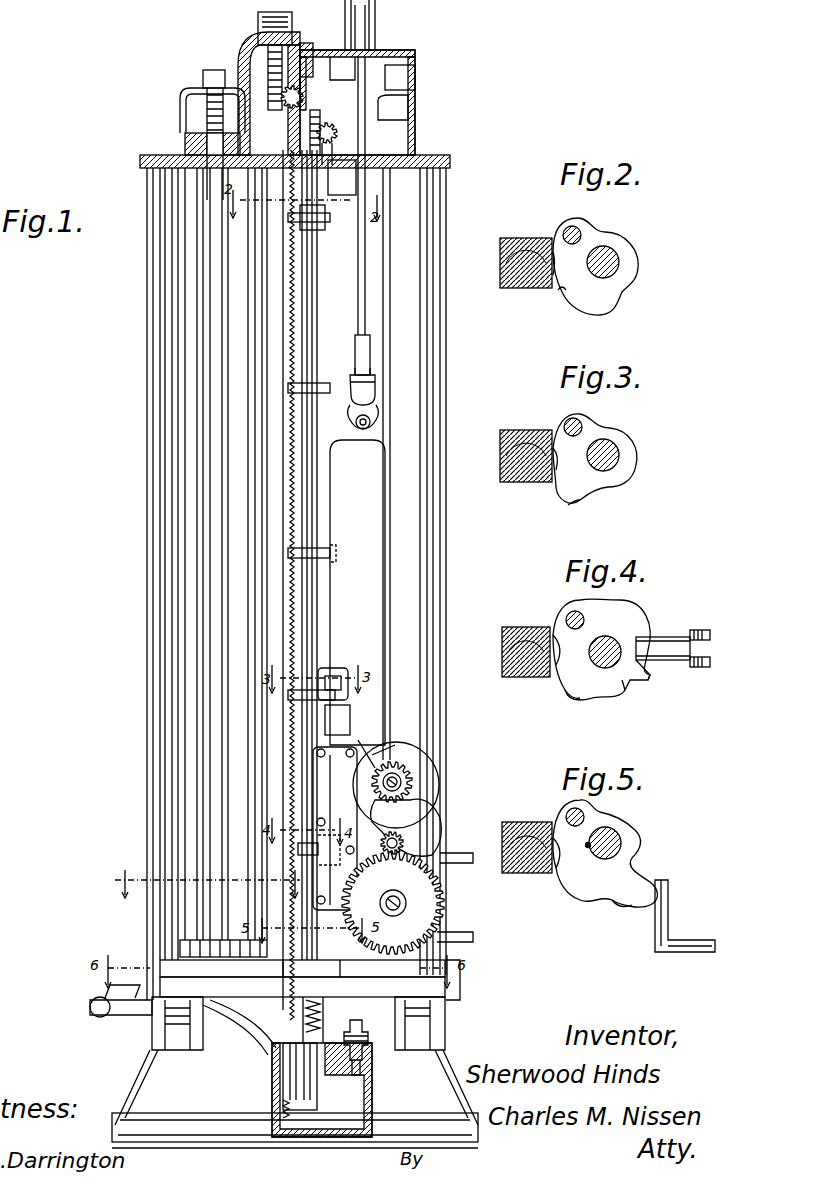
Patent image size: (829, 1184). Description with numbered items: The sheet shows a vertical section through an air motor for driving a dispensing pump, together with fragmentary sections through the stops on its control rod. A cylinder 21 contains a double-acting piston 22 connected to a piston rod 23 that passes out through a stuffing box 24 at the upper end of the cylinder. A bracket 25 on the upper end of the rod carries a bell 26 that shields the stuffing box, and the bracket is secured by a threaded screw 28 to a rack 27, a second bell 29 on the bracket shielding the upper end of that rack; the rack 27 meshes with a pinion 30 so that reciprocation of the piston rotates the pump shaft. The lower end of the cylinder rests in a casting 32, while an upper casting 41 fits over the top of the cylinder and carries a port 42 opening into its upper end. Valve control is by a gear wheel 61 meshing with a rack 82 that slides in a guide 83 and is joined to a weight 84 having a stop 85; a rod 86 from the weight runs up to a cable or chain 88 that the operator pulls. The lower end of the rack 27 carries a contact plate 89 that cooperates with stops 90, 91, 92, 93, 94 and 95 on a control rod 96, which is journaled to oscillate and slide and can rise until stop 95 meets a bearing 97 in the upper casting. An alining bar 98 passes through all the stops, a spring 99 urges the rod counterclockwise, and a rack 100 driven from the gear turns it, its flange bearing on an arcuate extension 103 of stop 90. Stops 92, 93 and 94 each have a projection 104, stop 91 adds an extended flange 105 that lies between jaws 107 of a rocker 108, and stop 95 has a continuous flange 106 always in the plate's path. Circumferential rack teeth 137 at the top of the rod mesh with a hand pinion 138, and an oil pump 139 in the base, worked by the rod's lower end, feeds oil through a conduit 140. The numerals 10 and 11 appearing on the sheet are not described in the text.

In FIG. 1, the cap 10 is at (289, 27).
In FIG. 1, the section line 11 is at (106, 880).
In FIG. 1, the cylinder 21 is at (178, 733).
In FIG. 1, the double-acting piston 22 is at (177, 947).
In FIG. 1, the piston rod 23 is at (213, 532).
In FIG. 1, the stuffing box 24 is at (186, 140).
In FIG. 1, the bracket 25 is at (241, 78).
In FIG. 1, the bell 26 is at (182, 108).
In FIG. 1, the rack 27 is at (270, 137).
In FIG. 2, the rack 27 is at (530, 255).
In FIG. 3, the rack 27 is at (510, 468).
In FIG. 4, the rack 27 is at (537, 647).
In FIG. 5, the rack 27 is at (527, 830).
In FIG. 1, the threaded screw 28 is at (305, 55).
In FIG. 1, the bell 29 is at (247, 50).
In FIG. 1, the pinion 30 is at (305, 95).
In FIG. 1, the casting 32 is at (248, 993).
In FIG. 1, the upper casting 41 is at (142, 160).
In FIG. 1, the port 42 is at (227, 180).
In FIG. 1, the gear wheel 61 is at (427, 905).
In FIG. 1, the rack 82 is at (343, 988).
In FIG. 1, the guide 83 is at (337, 762).
In FIG. 1, the weight 84 is at (378, 473).
In FIG. 1, the stop 85 is at (346, 718).
In FIG. 1, the rod 86 is at (365, 238).
In FIG. 1, the cable or chain 88 is at (378, 15).
In FIG. 1, the contact plate 89 is at (280, 958).
In FIG. 2, the contact plate 89 is at (556, 290).
In FIG. 3, the contact plate 89 is at (555, 440).
In FIG. 4, the contact plate 89 is at (560, 655).
In FIG. 5, the contact plate 89 is at (558, 865).
In FIG. 1, the stop 90 is at (345, 970).
In FIG. 5, the stop 90 is at (622, 882).
In FIG. 1, the stop 91 is at (320, 830).
In FIG. 4, the stop 91 is at (627, 667).
In FIG. 1, the stop 92 is at (315, 695).
In FIG. 3, the stop 92 is at (620, 478).
In FIG. 1, the stop 93 is at (317, 550).
In FIG. 1, the stop 94 is at (320, 383).
In FIG. 1, the stop 95 is at (328, 213).
In FIG. 2, the stop 95 is at (612, 300).
In FIG. 1, the control rod 96 is at (317, 630).
In FIG. 2, the control rod 96 is at (617, 258).
In FIG. 3, the control rod 96 is at (615, 450).
In FIG. 4, the control rod 96 is at (605, 668).
In FIG. 5, the control rod 96 is at (620, 840).
In FIG. 1, the bearing 97 is at (328, 178).
In FIG. 1, the alining bar 98 is at (300, 305).
In FIG. 2, the alining bar 98 is at (580, 228).
In FIG. 3, the alining bar 98 is at (582, 424).
In FIG. 4, the alining bar 98 is at (575, 611).
In FIG. 5, the alining bar 98 is at (588, 815).
In FIG. 1, the spring 99 is at (307, 1018).
In FIG. 5, the rack 100 is at (670, 915).
In FIG. 5, the arcuate extension 103 is at (640, 905).
In FIG. 3, the projection 104 is at (575, 498).
In FIG. 4, the projection 104 is at (573, 690).
In FIG. 4, the extended flange 105 is at (620, 615).
In FIG. 2, the continuous flange 106 is at (562, 305).
In FIG. 4, the jaws 107 is at (640, 672).
In FIG. 4, the rocker 108 is at (672, 648).
In FIG. 1, the circumferential rack teeth 137 is at (322, 118).
In FIG. 1, the pinion 138 is at (338, 134).
In FIG. 1, the oil pump 139 is at (287, 1087).
In FIG. 1, the conduit 140 is at (367, 1035).